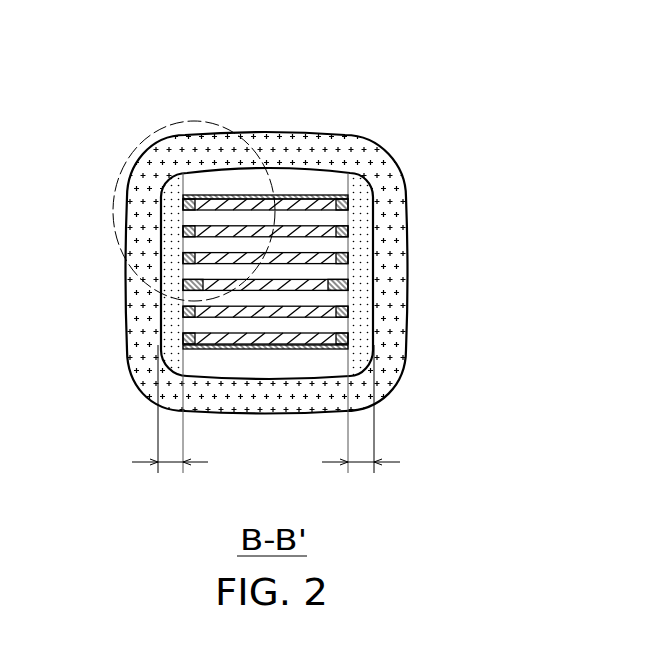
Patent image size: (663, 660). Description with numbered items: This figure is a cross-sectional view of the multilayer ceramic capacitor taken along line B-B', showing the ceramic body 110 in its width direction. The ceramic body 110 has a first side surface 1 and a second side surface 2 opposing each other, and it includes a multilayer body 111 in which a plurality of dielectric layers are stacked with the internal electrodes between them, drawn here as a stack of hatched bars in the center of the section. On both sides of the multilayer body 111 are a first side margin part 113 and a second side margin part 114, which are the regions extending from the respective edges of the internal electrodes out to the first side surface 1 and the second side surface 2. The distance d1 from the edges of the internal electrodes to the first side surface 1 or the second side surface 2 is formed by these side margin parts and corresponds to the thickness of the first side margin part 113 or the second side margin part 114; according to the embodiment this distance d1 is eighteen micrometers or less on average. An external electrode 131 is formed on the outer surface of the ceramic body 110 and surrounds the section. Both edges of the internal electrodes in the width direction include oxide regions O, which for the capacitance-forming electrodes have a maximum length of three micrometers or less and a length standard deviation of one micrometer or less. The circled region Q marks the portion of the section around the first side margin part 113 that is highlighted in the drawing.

The first side surface 1 is at (148, 306).
The second side surface 2 is at (379, 256).
The ceramic body 110 is at (267, 365).
The multilayer body 111 is at (275, 162).
The first side margin part 113 is at (173, 200).
The second side margin part 114 is at (358, 210).
The external electrode 131 is at (386, 212).
The oxide region O is at (343, 298).
The enlarged region Q is at (116, 188).
The distance from internal electrode edges to side surface d1 is at (266, 425).